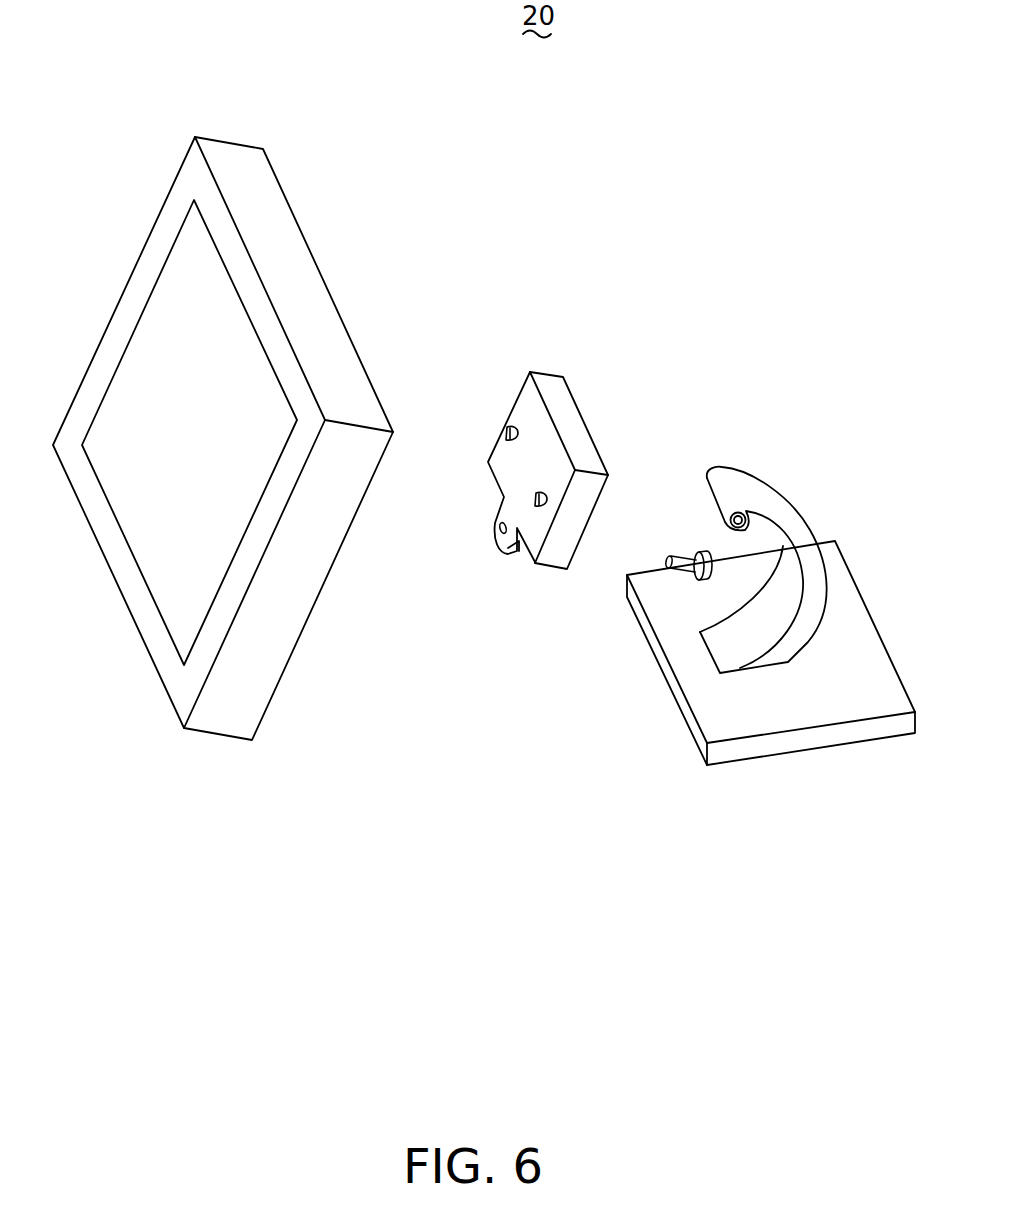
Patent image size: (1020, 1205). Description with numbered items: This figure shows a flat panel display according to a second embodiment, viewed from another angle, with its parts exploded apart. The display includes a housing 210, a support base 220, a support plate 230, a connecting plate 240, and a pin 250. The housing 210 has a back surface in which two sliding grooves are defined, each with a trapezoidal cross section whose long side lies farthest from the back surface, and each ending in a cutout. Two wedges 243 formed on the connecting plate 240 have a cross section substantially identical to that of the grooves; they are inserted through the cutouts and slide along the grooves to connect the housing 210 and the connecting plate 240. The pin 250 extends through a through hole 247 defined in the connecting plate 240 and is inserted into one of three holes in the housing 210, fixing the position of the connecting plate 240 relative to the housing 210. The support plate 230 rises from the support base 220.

The housing 210 is at (288, 236).
The support base 220 is at (842, 577).
The support plate 230 is at (752, 463).
The connecting plate 240 is at (583, 398).
The wedges 243 is at (505, 427).
The through hole 247 is at (500, 535).
The pin 250 is at (682, 547).